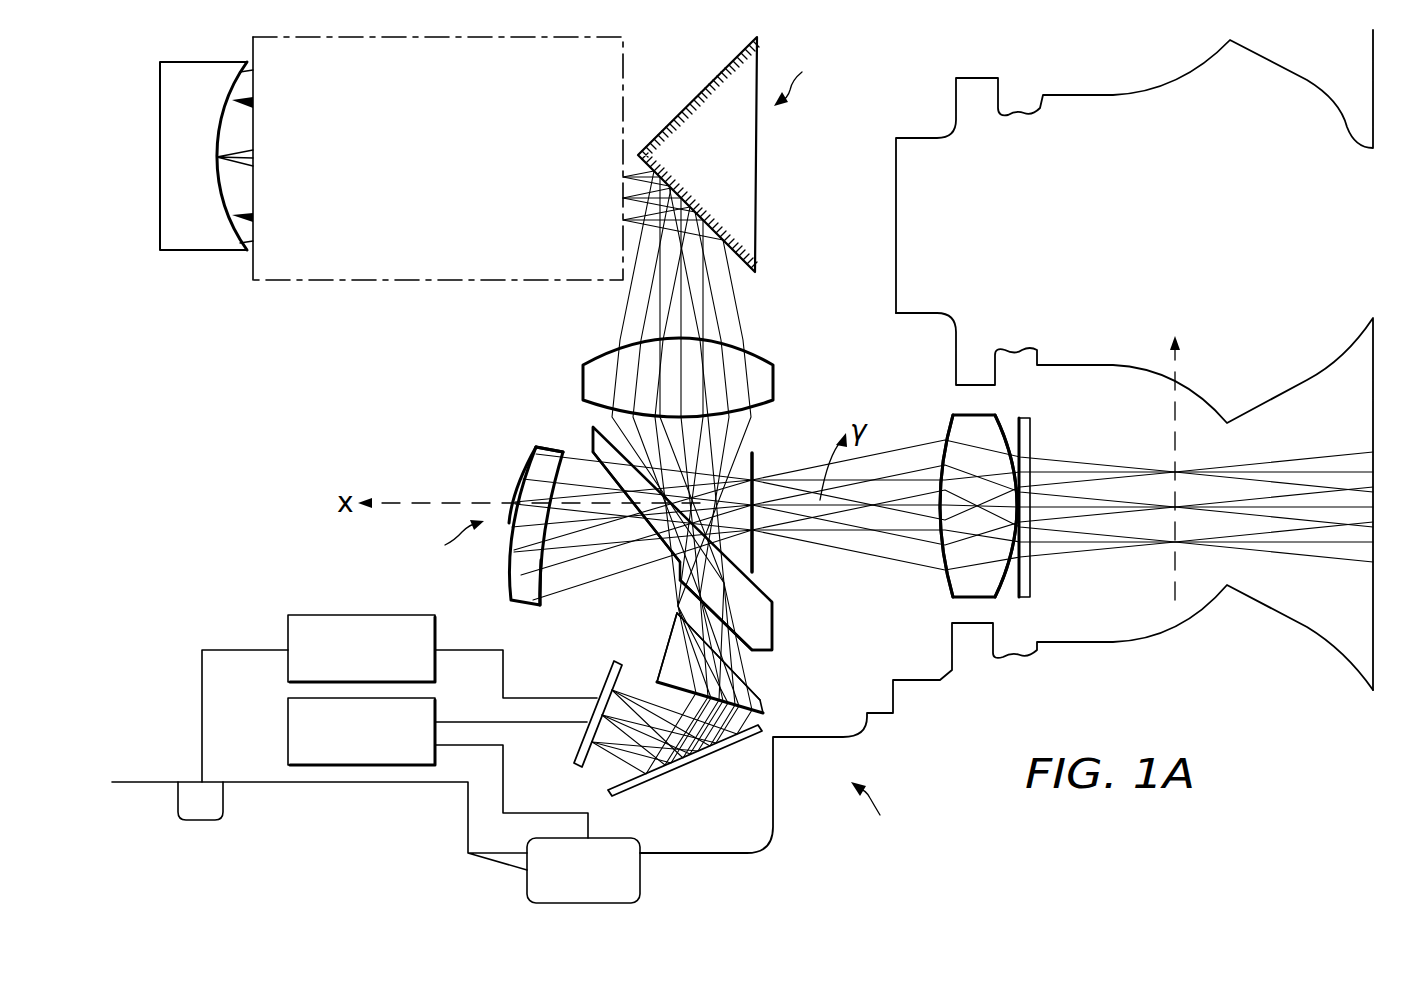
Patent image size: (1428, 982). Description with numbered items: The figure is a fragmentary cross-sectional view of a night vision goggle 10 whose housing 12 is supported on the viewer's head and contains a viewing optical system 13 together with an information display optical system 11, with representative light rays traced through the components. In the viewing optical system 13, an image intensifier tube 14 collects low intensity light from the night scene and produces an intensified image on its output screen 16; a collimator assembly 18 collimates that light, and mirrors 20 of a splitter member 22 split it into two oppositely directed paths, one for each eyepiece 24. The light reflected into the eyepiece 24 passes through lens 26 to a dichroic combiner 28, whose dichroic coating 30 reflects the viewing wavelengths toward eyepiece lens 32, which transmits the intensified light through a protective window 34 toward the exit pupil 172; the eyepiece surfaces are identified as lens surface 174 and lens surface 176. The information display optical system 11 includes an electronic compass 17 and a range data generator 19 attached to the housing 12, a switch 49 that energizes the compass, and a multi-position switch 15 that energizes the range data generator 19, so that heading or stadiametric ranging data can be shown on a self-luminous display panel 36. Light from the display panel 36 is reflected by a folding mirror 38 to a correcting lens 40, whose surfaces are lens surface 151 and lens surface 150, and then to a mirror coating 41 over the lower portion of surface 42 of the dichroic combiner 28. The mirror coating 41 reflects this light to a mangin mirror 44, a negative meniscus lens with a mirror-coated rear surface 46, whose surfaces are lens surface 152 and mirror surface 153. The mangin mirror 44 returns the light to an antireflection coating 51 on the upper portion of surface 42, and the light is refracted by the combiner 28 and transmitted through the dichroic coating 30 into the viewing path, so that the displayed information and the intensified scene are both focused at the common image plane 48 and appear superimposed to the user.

The night vision goggle 10 is at (881, 812).
The information display optical system 11 is at (452, 542).
The housing 12 is at (896, 222).
The viewing optical system 13 is at (800, 78).
The image intensifier tube 14 is at (177, 171).
The multi-position switch 15 is at (570, 883).
The output screen 16 is at (228, 183).
The electronic compass 17 is at (288, 632).
The collimator assembly 18 is at (425, 171).
The range data generator 19 is at (288, 745).
The mirrors 20 is at (717, 79).
The splitter member 22 is at (699, 170).
The eyepiece 24 is at (1074, 428).
The lens 26 is at (773, 381).
The dichroic combiner 28 is at (775, 625).
The dichroic coating 30 is at (685, 550).
The eyepiece lens 32 is at (970, 497).
The protective window 34 is at (1030, 590).
The display panel 36 is at (580, 767).
The folding mirror 38 is at (712, 752).
The correcting lens 40 is at (720, 677).
The mirror coating 41 is at (750, 660).
The surface of dichroic combiner 42 is at (650, 560).
The mangin mirror 44 is at (515, 540).
The rear surface 46 is at (526, 458).
The image plane 48 is at (756, 466).
The switch 49 is at (190, 820).
The antireflection coating 51 is at (600, 468).
The lens surface 150 is at (657, 688).
The lens surface 151 is at (762, 686).
The lens surface 152 is at (548, 585).
The mirror surface 153 is at (515, 487).
The exit pupil 172 is at (1178, 440).
The lens surface 174 is at (1017, 424).
The lens surface 176 is at (946, 590).